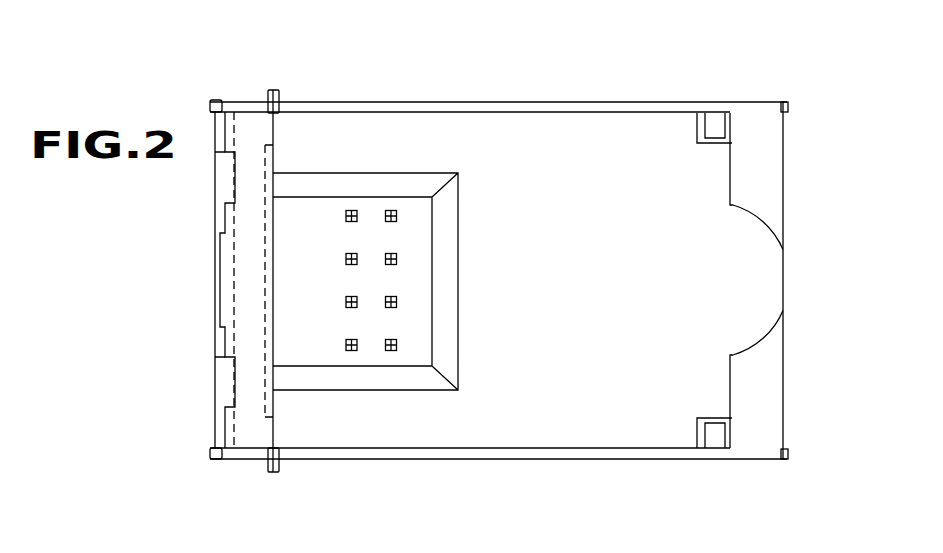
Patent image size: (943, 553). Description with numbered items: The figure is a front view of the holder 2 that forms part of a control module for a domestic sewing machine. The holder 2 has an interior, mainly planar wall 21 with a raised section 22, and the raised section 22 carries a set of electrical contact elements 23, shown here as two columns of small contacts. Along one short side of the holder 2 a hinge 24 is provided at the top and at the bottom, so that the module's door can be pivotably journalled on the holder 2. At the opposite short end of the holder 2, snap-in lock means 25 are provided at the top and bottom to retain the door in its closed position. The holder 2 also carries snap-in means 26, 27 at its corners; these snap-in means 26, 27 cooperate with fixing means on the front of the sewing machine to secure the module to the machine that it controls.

The holder 2 is at (799, 146).
The interior mainly planar wall 21 is at (538, 127).
The raised section 22 is at (403, 203).
The electrical contact elements 23 is at (352, 351).
The hinge 24 is at (272, 92).
The snap-in lock means 25 is at (718, 125).
The snap-in means 26 is at (781, 103).
The snap-in means 27 is at (215, 102).